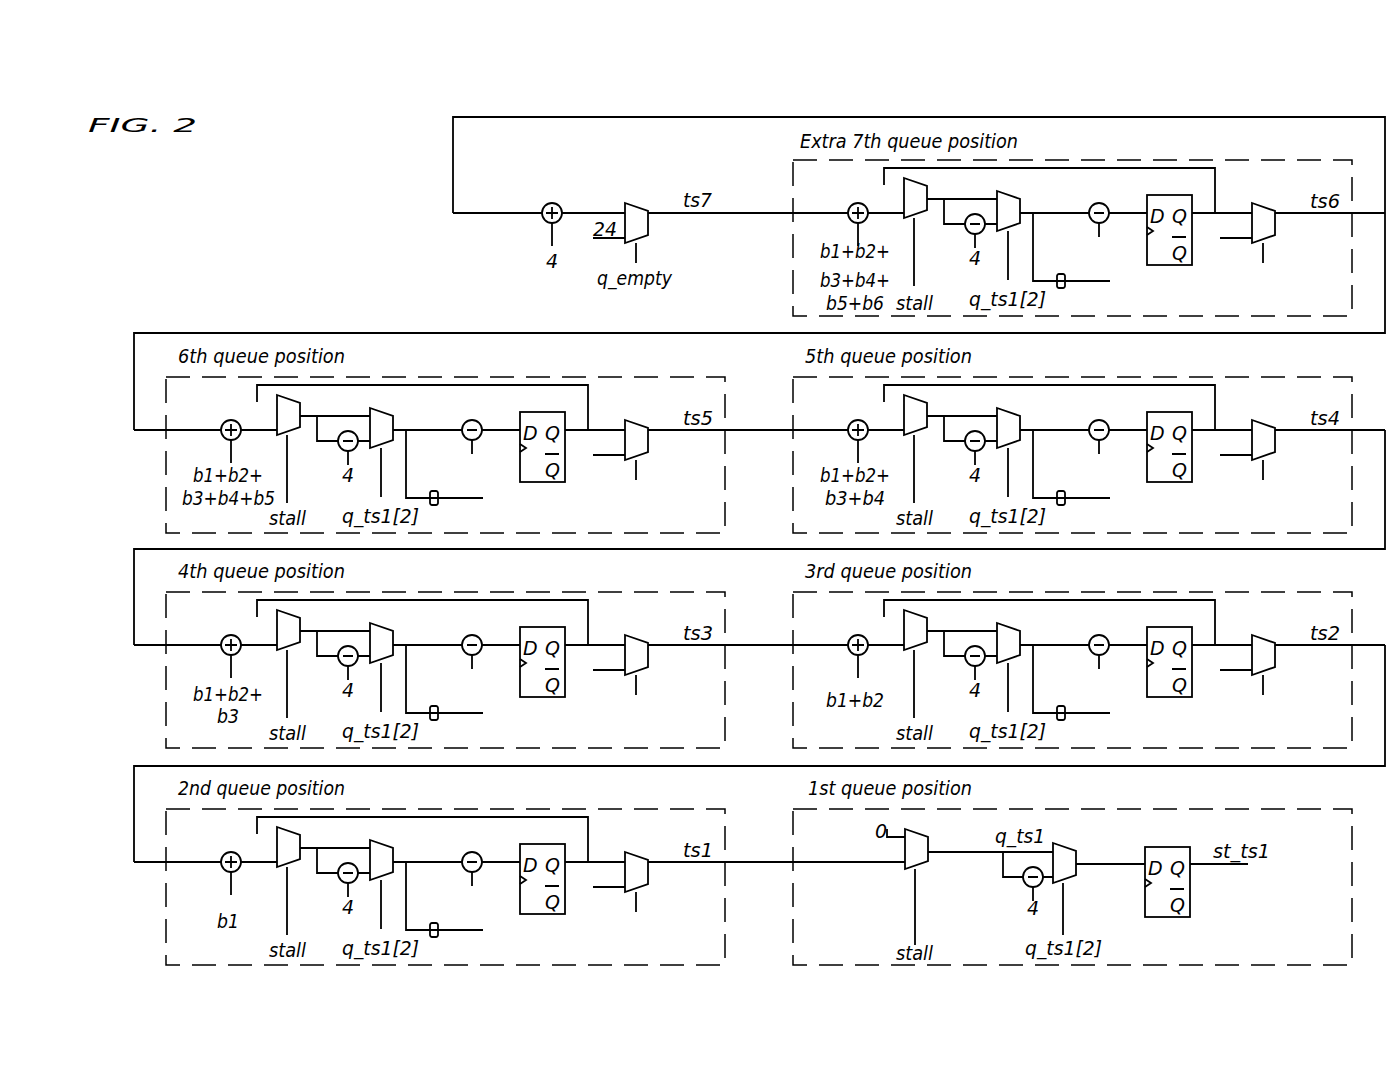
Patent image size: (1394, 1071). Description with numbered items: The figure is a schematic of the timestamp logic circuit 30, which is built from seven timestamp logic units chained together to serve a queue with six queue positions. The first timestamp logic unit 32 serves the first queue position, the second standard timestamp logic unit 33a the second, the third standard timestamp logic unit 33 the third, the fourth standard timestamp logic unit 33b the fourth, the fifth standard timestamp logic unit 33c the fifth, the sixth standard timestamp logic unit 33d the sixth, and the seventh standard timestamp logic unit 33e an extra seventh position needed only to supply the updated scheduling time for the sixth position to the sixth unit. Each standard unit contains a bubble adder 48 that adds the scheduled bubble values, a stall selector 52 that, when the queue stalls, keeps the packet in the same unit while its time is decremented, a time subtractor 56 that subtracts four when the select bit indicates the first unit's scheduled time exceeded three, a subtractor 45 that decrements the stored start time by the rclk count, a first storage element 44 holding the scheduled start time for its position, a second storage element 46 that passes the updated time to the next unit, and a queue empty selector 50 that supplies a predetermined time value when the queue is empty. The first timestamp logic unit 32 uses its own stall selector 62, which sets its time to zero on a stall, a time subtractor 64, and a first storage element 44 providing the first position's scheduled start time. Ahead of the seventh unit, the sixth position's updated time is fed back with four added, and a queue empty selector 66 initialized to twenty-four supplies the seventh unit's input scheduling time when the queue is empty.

The timestamp logic circuit 30 is at (334, 285).
The first timestamp logic unit 32 is at (1072, 887).
The third standard timestamp logic unit 33 is at (1072, 670).
The second standard timestamp logic unit 33a is at (445, 887).
The fourth standard timestamp logic unit 33b is at (445, 670).
The fifth standard timestamp logic unit 33c is at (1072, 455).
The sixth standard timestamp logic unit 33d is at (445, 455).
The seventh standard timestamp logic unit 33e is at (1072, 238).
The first storage element 44 is at (818, 616).
The subtractor 45 is at (776, 546).
The second storage element 46 is at (863, 568).
The bubble adder 48 is at (529, 528).
The queue empty selector 50 is at (952, 571).
The stall selector 52 is at (624, 522).
The time subtractor 56 is at (713, 527).
The stall selector 62 is at (939, 848).
The time subtractor 64 is at (1088, 849).
The queue empty selector 66 is at (637, 202).